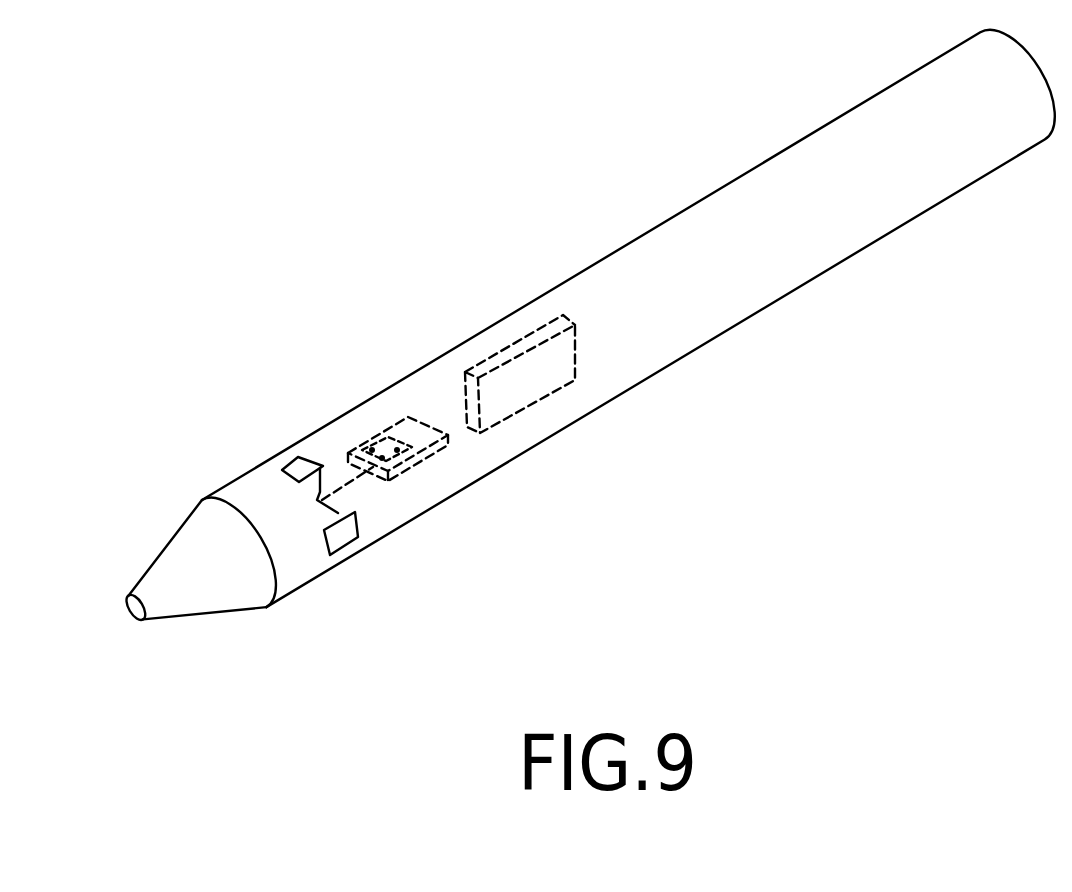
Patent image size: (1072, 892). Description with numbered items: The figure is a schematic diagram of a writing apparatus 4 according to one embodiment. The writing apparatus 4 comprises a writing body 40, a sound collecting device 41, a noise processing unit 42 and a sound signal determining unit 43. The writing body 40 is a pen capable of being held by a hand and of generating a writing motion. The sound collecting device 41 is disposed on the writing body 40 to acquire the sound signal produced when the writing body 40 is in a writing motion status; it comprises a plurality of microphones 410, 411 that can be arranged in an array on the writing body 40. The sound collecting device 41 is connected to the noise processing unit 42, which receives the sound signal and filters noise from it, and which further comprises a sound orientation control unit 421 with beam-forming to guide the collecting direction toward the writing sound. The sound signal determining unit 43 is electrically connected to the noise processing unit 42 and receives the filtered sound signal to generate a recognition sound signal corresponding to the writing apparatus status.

The writing apparatus 4 is at (440, 105).
The writing body 40 is at (842, 233).
The sound collecting device 41 is at (137, 435).
The microphone 410 is at (302, 467).
The microphone 411 is at (327, 538).
The noise processing unit 42 is at (418, 463).
The sound orientation control unit 421 is at (379, 425).
The sound signal determining unit 43 is at (510, 387).